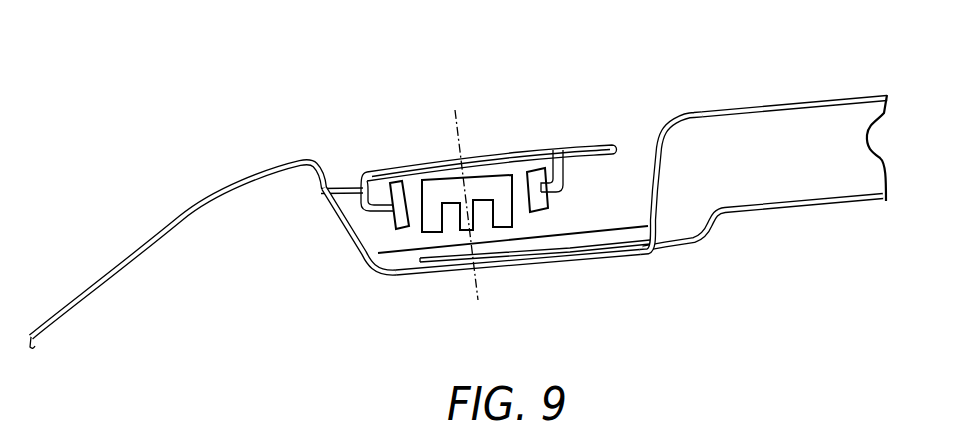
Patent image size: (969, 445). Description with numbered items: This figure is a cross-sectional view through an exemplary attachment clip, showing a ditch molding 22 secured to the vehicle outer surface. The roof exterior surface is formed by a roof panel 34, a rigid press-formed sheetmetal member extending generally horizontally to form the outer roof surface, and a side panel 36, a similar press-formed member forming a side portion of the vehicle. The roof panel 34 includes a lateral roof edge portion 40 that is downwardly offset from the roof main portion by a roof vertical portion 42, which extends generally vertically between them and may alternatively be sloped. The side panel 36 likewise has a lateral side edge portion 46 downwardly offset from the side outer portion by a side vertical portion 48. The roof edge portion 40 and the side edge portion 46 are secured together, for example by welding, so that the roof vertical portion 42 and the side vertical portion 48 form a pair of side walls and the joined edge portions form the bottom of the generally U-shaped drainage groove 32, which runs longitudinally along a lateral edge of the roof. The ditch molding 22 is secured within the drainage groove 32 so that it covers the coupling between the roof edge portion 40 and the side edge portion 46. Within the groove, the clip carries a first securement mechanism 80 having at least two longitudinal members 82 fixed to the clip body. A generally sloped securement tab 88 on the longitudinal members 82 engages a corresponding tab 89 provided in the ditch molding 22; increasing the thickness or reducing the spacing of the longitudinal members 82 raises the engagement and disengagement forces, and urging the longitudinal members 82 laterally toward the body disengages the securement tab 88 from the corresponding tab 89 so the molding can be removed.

The ditch molding 22 is at (527, 147).
The drainage groove 32 is at (688, 143).
The roof panel 34 is at (858, 95).
The side panel 36 is at (180, 213).
The lateral roof edge portion 40 is at (492, 126).
The roof vertical portion 42 is at (661, 177).
The lateral side edge portion 46 is at (537, 265).
The side vertical portion 48 is at (335, 218).
The first securement mechanism 80 is at (440, 178).
The longitudinal members 82 is at (470, 249).
The securement tab 88 is at (368, 172).
The corresponding tab 89 is at (389, 230).